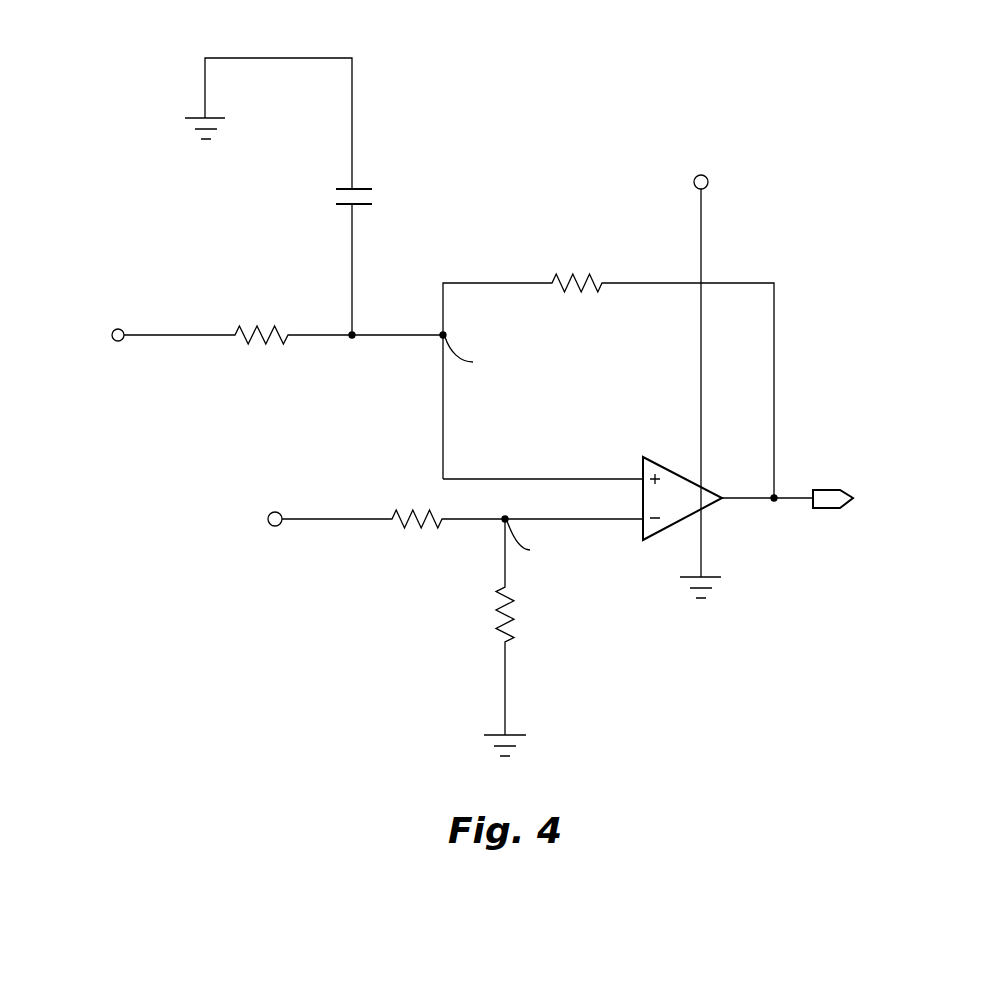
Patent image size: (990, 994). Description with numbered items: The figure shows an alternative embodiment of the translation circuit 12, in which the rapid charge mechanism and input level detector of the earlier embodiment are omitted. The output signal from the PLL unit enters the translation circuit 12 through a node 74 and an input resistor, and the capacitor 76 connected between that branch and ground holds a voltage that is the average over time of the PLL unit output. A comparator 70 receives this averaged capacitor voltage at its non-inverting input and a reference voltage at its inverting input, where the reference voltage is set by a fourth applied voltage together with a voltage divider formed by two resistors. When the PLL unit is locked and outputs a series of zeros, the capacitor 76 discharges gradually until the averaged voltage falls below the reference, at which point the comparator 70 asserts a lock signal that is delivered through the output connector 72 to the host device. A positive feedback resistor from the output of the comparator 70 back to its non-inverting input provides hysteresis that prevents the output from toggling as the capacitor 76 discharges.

The translation circuit 12 is at (589, 148).
The comparator 70 is at (673, 475).
The host device connector 72 is at (827, 488).
The node 74 is at (118, 328).
The capacitor 76 is at (368, 196).